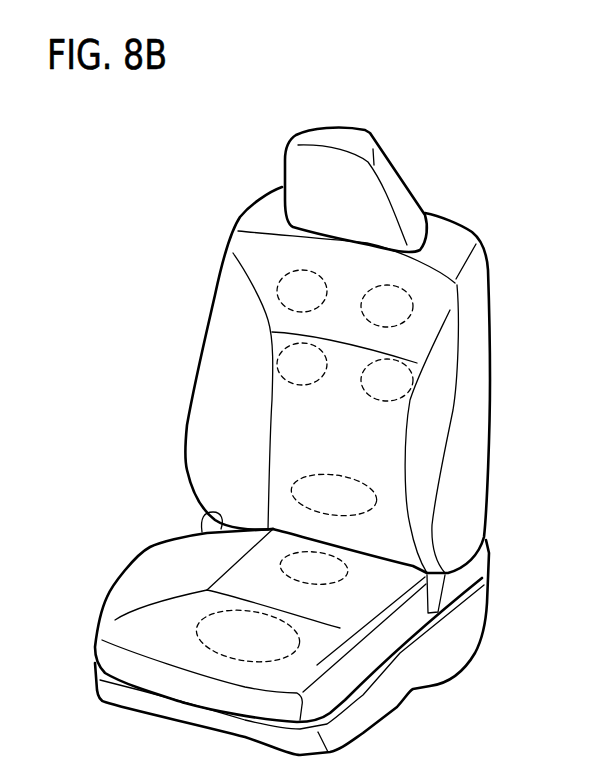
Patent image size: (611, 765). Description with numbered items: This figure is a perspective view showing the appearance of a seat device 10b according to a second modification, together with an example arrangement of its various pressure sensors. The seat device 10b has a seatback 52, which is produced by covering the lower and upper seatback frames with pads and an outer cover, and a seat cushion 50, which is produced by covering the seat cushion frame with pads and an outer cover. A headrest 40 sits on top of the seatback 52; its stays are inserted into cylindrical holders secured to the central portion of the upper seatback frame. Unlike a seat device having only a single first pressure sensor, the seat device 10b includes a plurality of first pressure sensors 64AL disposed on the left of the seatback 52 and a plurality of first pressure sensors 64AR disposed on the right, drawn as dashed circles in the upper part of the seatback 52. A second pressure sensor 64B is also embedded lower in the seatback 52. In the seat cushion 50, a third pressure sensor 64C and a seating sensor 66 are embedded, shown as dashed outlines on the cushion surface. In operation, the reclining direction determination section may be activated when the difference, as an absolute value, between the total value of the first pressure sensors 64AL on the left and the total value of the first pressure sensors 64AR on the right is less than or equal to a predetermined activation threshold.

The seat device 10b is at (152, 170).
The headrest 40 is at (360, 133).
The seatback 52 is at (457, 483).
The seat cushion 50 is at (137, 591).
The first pressure sensors 64AR is at (277, 360).
The first pressure sensors 64AL is at (403, 313).
The second pressure sensor 64B is at (313, 474).
The third pressure sensor 64C is at (198, 633).
The seating sensor 66 is at (280, 570).